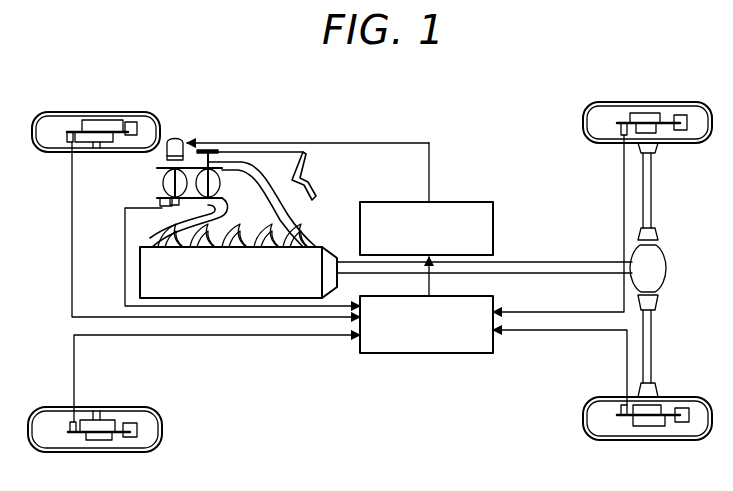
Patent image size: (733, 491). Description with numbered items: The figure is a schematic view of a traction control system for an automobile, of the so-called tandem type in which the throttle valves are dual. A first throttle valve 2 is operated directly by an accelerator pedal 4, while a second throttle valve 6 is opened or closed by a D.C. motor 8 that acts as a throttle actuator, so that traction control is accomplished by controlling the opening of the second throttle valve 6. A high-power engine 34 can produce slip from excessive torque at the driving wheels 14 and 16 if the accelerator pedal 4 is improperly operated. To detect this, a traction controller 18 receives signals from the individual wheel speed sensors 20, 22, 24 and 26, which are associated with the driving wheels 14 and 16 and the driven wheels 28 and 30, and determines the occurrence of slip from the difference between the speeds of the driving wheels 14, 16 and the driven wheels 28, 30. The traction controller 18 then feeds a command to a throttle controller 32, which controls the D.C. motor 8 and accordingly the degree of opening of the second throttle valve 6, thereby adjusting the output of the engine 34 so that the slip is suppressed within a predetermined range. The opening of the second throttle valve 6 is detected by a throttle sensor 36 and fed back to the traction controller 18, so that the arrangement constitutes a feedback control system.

The first throttle valve 2 is at (220, 182).
The accelerator pedal 4 is at (314, 185).
The second throttle valve 6 is at (163, 183).
The D.C. motor 8 is at (177, 137).
The driving wheel 14 is at (697, 143).
The driving wheel 16 is at (680, 401).
The traction controller 18 is at (433, 353).
The wheel speed sensor 20 is at (67, 142).
The wheel speed sensor 22 is at (78, 420).
The wheel speed sensor 24 is at (614, 143).
The wheel speed sensor 26 is at (618, 404).
The driven wheel 28 is at (52, 122).
The driven wheel 30 is at (50, 410).
The throttle controller 32 is at (494, 226).
The engine 34 is at (322, 247).
The throttle sensor 36 is at (160, 208).